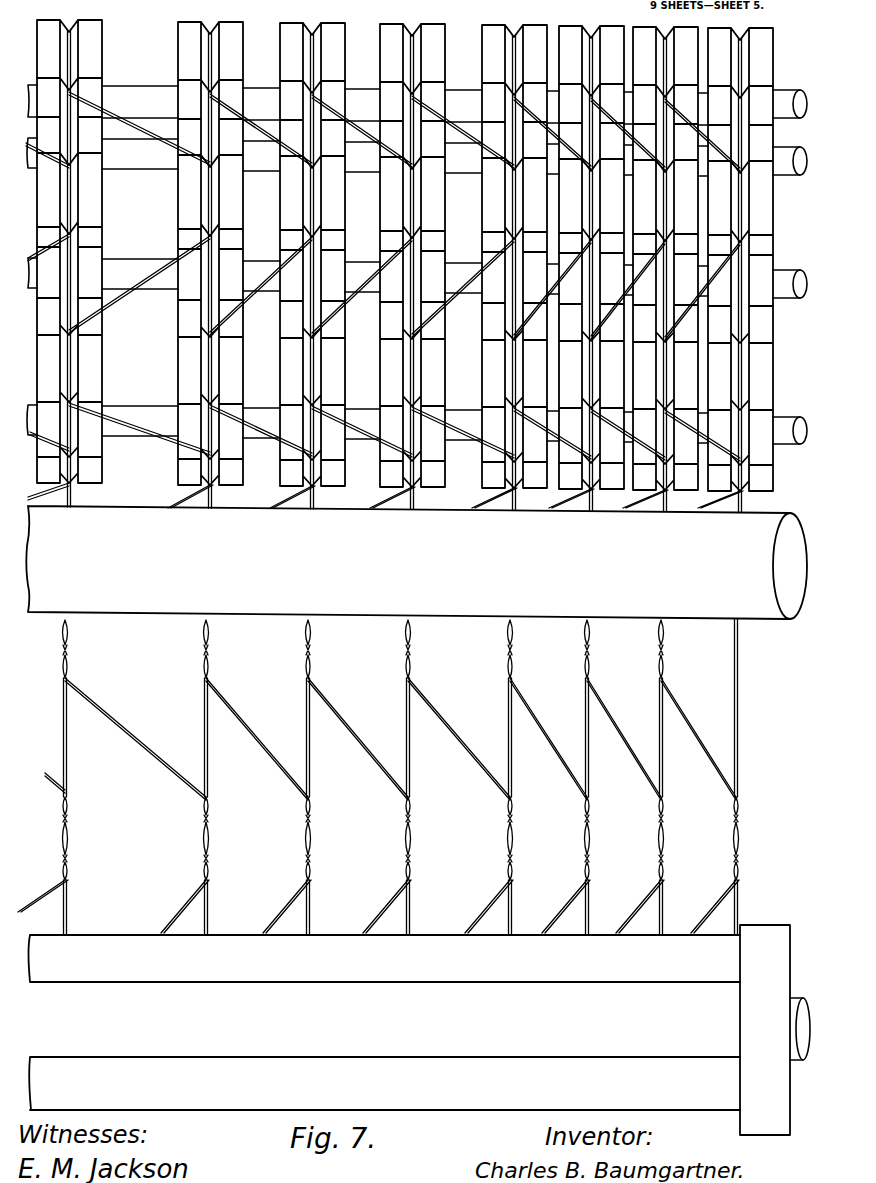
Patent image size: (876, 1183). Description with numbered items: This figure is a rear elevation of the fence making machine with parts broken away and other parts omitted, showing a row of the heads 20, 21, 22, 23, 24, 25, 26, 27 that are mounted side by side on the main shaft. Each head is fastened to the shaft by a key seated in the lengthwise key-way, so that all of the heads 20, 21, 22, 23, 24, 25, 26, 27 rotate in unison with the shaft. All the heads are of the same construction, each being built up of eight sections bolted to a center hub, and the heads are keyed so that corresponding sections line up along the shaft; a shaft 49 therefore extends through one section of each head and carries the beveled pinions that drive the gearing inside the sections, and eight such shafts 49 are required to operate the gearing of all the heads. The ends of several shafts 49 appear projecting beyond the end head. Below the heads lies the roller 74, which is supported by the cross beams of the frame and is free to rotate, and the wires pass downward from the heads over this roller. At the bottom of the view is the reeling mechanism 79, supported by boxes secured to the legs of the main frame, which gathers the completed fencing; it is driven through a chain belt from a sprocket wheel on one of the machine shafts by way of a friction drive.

The head 20 is at (740, 259).
The head 21 is at (665, 258).
The head 22 is at (591, 257).
The head 23 is at (514, 257).
The head 24 is at (412, 255).
The head 25 is at (312, 255).
The head 26 is at (210, 254).
The head 27 is at (69, 253).
The shaft 49 is at (417, 274).
The roller 74 is at (416, 562).
The reeling mechanism 79 is at (385, 958).